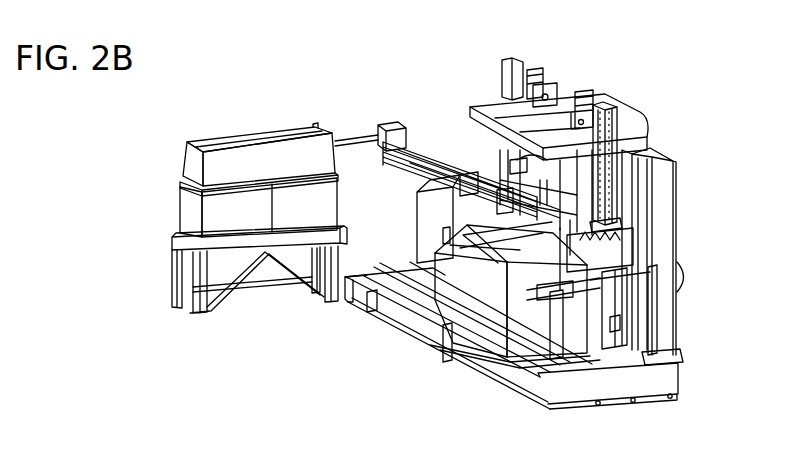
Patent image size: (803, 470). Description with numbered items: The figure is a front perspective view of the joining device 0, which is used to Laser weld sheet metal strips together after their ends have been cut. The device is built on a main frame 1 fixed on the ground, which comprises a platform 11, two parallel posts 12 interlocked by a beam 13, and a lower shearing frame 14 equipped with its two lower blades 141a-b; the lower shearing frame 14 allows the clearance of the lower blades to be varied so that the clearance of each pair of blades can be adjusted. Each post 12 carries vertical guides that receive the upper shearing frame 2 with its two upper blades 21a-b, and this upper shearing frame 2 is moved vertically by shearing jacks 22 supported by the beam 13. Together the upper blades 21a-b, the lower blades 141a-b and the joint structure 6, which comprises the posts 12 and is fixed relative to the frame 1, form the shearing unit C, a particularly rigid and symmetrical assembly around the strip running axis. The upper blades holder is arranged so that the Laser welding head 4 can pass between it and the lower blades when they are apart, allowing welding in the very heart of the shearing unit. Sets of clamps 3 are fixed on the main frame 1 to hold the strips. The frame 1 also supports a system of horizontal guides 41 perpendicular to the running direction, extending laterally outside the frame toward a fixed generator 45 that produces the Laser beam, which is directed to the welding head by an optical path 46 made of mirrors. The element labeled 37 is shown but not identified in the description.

The joining device 0 is at (237, 122).
The fixed generator 45 is at (192, 163).
The Laser welding head 4 is at (400, 119).
The optical path 46 is at (423, 190).
The system of horizontal guides 41 is at (420, 205).
The main frame 1 is at (671, 378).
The platform 11 is at (673, 397).
The upper blades 21a-b is at (550, 235).
The sets of clamps 3 is at (430, 352).
The gripper support 37 is at (486, 350).
The upper shearing frame 2 is at (570, 97).
The beam 13 is at (510, 117).
The shearing jacks 22 is at (540, 64).
The joint structure 6 is at (614, 143).
The posts 12 is at (664, 194).
The lower shearing frame 14 is at (597, 290).
The lower blades 141a-b is at (588, 293).
The shearing unit C is at (648, 114).